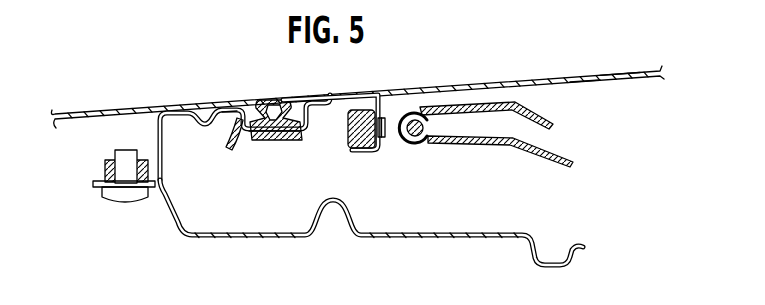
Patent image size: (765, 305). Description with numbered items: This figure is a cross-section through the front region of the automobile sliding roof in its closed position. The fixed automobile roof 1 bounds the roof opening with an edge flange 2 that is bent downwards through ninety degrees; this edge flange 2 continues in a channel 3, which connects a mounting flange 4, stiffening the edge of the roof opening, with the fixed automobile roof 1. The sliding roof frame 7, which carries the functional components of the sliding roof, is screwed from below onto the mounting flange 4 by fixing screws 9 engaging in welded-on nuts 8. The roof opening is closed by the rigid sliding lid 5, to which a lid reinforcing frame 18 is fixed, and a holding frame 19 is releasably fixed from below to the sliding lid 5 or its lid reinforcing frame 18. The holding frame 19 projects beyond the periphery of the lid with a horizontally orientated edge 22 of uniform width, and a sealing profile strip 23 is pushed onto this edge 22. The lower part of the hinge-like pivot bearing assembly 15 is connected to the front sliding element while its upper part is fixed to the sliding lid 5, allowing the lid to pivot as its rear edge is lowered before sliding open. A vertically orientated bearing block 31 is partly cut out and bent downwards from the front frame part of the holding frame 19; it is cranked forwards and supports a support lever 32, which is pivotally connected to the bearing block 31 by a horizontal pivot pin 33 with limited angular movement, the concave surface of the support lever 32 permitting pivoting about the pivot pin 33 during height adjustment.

The fixed automobile roof 1 is at (90, 112).
The edge flange 2 is at (229, 142).
The channel 3 is at (237, 118).
The mounting flange 4 is at (157, 122).
The sliding lid 5 is at (615, 74).
The sliding roof frame 7 is at (270, 240).
The welded-on nuts 8 is at (103, 165).
The fixing screws 9 is at (133, 205).
The pivot bearing assembly 15 is at (412, 145).
The lid reinforcing frame 18 is at (588, 81).
The holding frame 19 is at (520, 98).
The edge 22 is at (275, 150).
The sealing profile strip 23 is at (275, 93).
The bearing block 31 is at (383, 96).
The support lever 32 is at (346, 132).
The pivot pin 33 is at (382, 140).